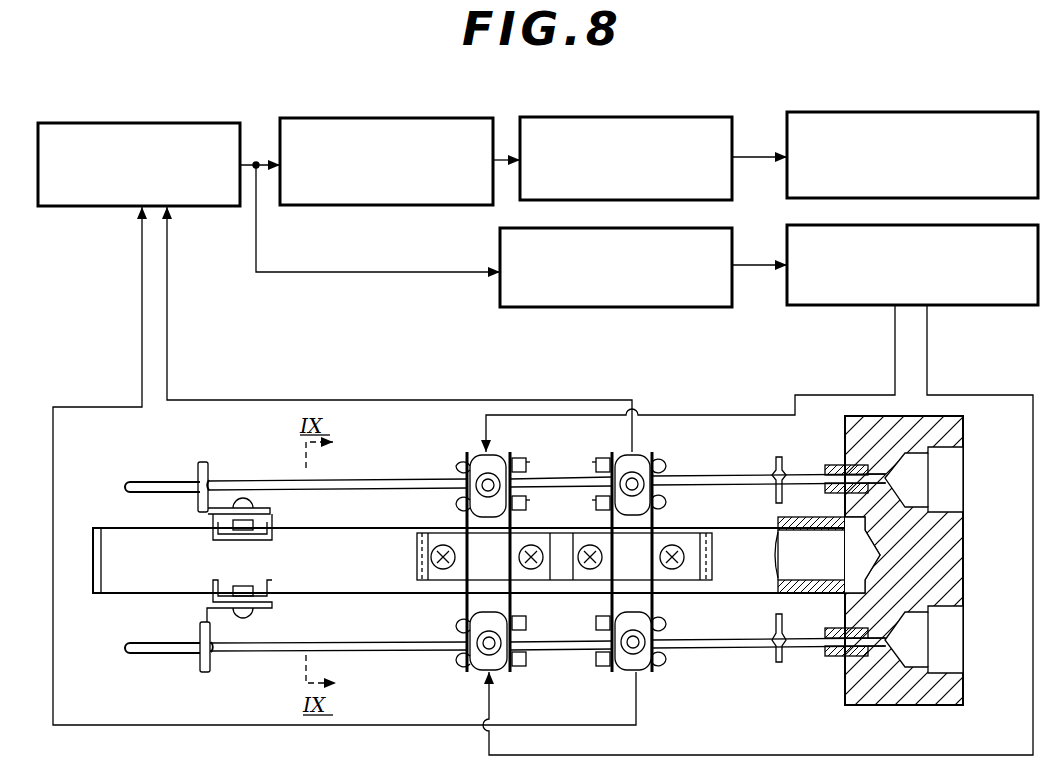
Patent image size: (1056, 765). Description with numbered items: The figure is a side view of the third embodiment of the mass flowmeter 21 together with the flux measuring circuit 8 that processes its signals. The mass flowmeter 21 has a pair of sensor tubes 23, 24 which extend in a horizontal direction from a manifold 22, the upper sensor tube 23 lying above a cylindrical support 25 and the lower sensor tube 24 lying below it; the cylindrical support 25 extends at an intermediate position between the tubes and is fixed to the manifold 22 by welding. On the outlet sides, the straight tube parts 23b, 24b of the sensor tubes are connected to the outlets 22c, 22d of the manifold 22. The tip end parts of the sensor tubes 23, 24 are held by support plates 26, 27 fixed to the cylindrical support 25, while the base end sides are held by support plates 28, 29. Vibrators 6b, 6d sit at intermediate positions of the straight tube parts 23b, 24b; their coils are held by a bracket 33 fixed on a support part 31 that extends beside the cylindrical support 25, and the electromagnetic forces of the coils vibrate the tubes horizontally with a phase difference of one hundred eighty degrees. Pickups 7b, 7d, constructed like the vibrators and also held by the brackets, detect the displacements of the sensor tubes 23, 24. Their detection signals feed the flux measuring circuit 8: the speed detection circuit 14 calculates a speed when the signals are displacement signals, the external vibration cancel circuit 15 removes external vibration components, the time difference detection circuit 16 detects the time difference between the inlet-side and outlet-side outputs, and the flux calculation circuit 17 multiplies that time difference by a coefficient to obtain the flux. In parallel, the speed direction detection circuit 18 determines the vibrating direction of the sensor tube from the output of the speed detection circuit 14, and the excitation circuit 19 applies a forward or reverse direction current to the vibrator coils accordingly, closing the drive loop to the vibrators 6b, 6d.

The flux measuring circuit 8 is at (530, 97).
The mass flowmeter 21 is at (104, 85).
The speed detection circuit 14 is at (138, 123).
The external vibration cancel circuit 15 is at (346, 118).
The time difference detection circuit 16 is at (628, 117).
The flux calculation circuit 17 is at (877, 112).
The speed direction detection circuit 18 is at (602, 307).
The excitation circuit 19 is at (953, 306).
The manifold 22 is at (950, 575).
The outlet 22c is at (952, 486).
The outlet 22d is at (952, 650).
The sensor tube 23 is at (150, 482).
The straight tube part 23b is at (378, 480).
The sensor tube 24 is at (148, 645).
The straight tube part 24b is at (340, 642).
The cylindrical support 25 is at (96, 528).
The support plate 26 is at (196, 507).
The support plate 27 is at (196, 640).
The support plate 28 is at (780, 460).
The support plate 29 is at (786, 662).
The support part 31 is at (440, 535).
The bracket 33 is at (520, 605).
The vibrator 6b is at (500, 456).
The vibrator 6d is at (508, 672).
The pickup 7b is at (642, 456).
The pickup 7d is at (652, 672).